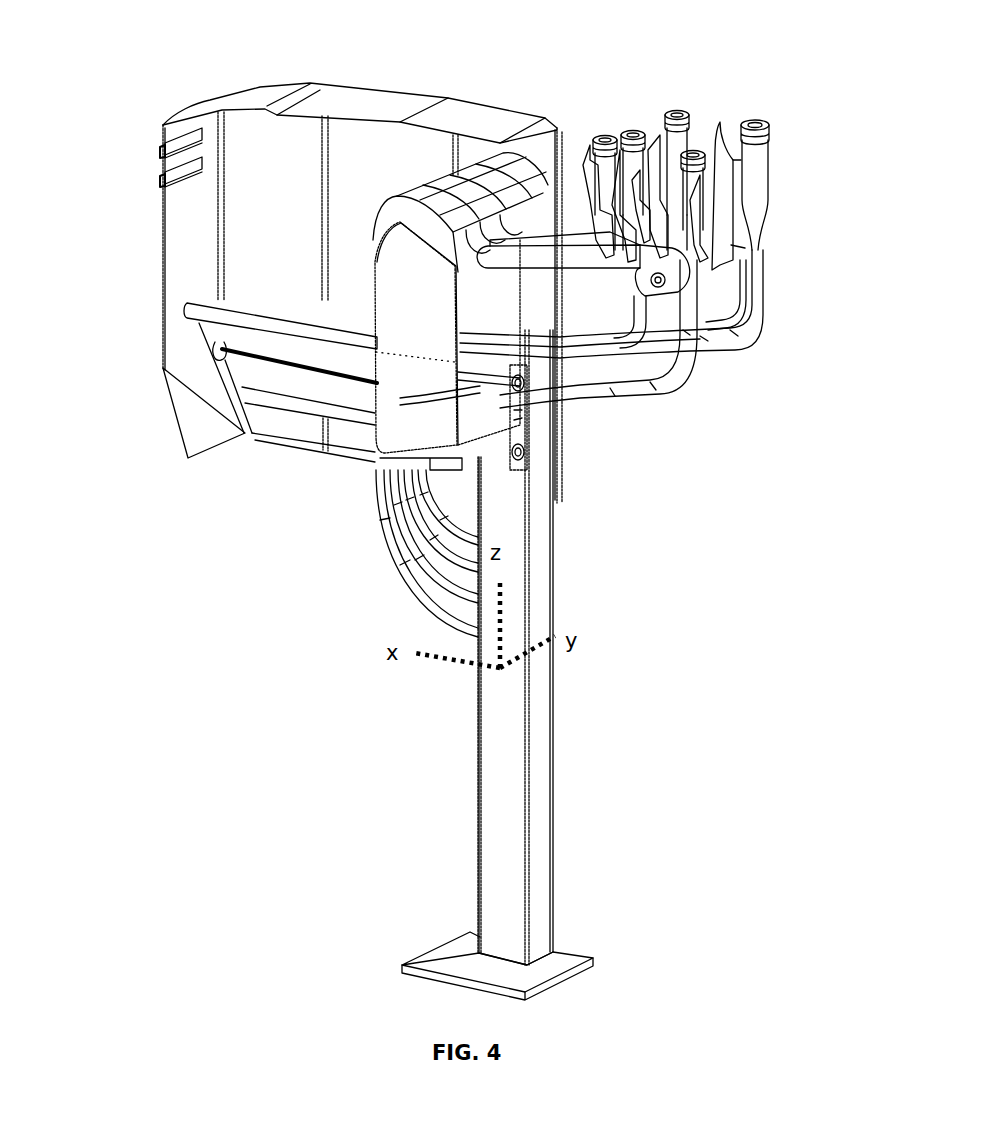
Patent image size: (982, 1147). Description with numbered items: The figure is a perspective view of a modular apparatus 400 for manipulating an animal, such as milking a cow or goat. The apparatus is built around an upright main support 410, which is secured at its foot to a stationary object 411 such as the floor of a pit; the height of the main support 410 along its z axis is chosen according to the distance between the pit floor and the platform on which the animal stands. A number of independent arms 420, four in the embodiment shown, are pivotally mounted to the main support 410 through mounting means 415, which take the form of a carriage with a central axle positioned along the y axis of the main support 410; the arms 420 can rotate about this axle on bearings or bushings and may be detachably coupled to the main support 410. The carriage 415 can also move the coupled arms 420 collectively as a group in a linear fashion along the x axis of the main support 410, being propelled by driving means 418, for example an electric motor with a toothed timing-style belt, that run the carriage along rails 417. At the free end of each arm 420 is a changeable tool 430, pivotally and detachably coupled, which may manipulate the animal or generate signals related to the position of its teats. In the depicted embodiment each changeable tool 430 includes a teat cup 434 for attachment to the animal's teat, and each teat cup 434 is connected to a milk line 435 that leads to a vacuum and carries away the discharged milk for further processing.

The modular apparatus 400 is at (170, 58).
The main support 410 is at (495, 806).
The stationary object 411 is at (543, 965).
The mounting means 415 is at (388, 318).
The rails 417 is at (288, 337).
The driving means 418 is at (428, 408).
The independent arms 420 is at (597, 268).
The changeable tools 430 is at (744, 90).
The teat cup 434 is at (772, 147).
The milk line 435 is at (768, 305).